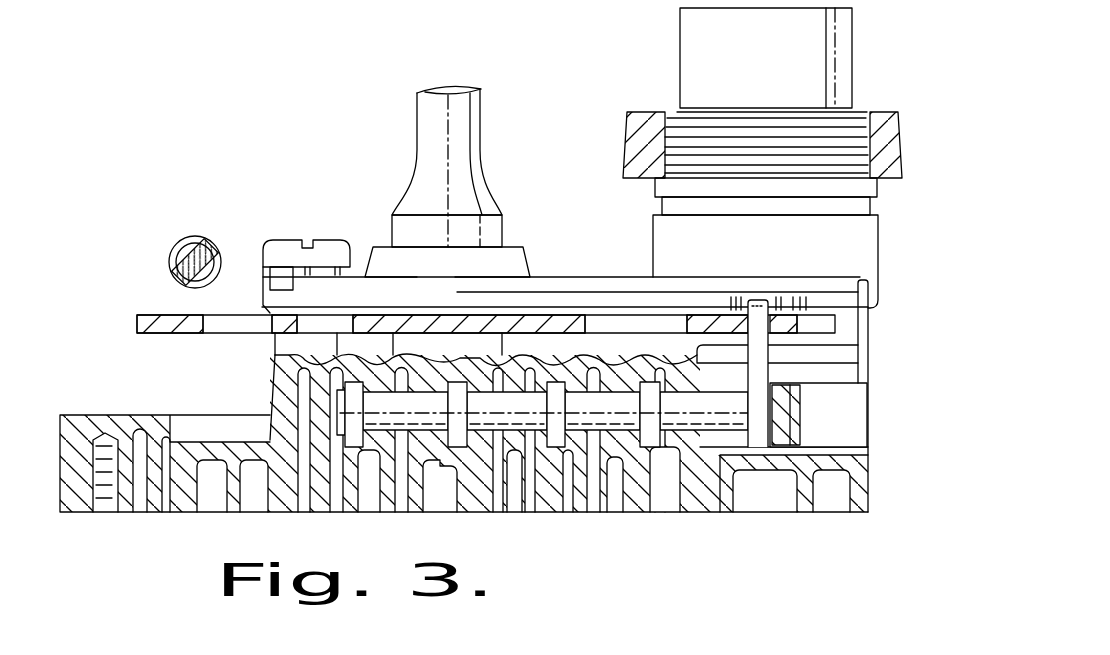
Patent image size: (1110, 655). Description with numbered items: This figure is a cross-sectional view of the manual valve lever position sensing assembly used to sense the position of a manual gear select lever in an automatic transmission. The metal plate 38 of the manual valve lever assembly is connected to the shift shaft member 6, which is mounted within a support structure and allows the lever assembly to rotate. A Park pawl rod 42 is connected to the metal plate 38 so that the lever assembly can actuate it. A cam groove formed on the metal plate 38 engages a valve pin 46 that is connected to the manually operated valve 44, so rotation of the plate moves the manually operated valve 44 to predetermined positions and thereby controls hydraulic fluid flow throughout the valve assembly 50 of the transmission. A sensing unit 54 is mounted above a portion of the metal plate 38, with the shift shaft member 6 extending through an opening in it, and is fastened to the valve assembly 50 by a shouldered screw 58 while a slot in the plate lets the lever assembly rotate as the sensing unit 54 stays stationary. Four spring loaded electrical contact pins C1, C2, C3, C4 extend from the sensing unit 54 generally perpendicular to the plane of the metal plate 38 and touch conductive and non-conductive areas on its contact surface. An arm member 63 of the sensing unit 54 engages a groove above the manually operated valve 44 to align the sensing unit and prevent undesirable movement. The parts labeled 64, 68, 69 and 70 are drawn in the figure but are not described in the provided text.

The shift shaft member 6 is at (436, 122).
The metal plate 38 is at (165, 313).
The Park pawl rod 42 is at (185, 262).
The manually operated valve 44 is at (683, 415).
The valve pin 46 is at (760, 404).
The valve assembly 50 is at (93, 430).
The sensing unit 54 is at (625, 235).
The shouldered screw 58 is at (303, 240).
The arm member 63 is at (860, 349).
The clamping nut 64 is at (628, 145).
The threaded insert 68 is at (690, 135).
The washer 69 is at (660, 190).
The drive column 70 is at (858, 118).
The electrical contact pin C1 is at (805, 302).
The electrical contact pin C2 is at (778, 308).
The electrical contact pin C3 is at (762, 310).
The electrical contact pin C4 is at (745, 308).